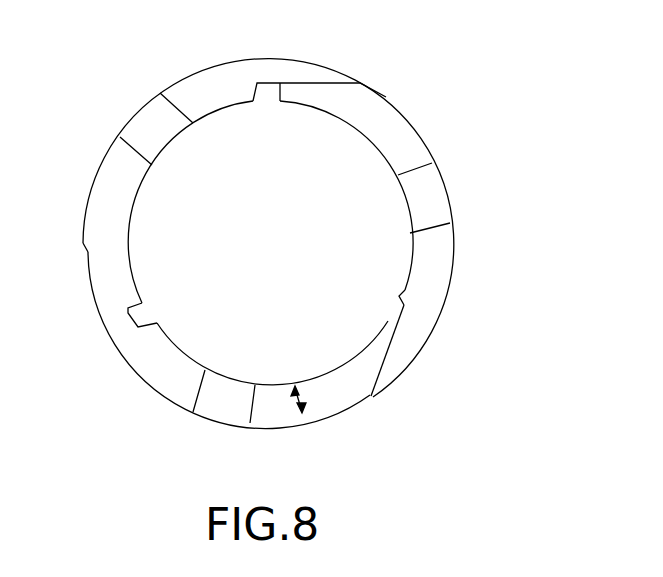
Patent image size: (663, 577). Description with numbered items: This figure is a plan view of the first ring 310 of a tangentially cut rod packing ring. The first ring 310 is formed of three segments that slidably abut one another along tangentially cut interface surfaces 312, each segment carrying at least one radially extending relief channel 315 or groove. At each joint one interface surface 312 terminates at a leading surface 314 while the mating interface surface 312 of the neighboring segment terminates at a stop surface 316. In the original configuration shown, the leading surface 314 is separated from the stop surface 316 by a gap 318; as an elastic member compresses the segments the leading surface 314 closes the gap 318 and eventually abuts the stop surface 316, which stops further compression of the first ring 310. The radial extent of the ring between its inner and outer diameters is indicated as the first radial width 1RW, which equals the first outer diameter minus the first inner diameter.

The first ring 310 is at (426, 58).
The interface surface 312 is at (386, 97).
The leading surface 314 is at (397, 322).
The relief channel 315 is at (432, 190).
The stop surface 316 is at (398, 297).
The gap 318 is at (118, 354).
The first radial width 1RW is at (302, 412).